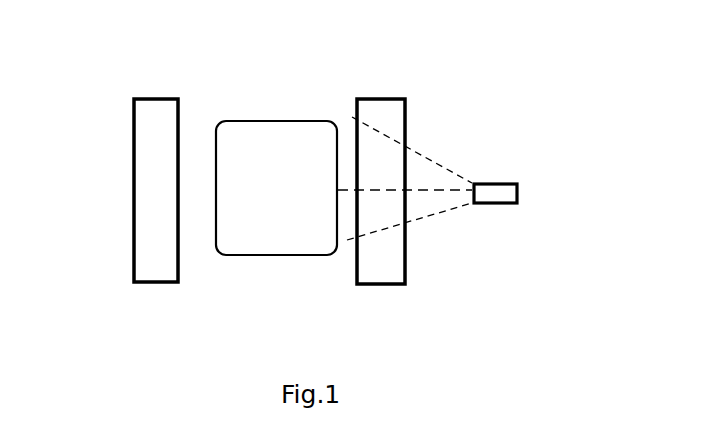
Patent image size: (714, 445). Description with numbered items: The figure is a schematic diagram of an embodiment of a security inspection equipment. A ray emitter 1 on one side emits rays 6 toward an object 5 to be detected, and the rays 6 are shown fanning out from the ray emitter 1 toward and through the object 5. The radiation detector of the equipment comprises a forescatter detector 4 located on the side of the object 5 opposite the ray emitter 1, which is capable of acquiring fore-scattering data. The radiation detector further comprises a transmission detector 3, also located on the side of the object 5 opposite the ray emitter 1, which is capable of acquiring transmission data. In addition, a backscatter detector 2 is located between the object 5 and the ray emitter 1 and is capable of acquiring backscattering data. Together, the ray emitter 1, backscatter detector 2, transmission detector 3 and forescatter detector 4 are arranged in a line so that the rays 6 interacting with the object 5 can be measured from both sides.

The ray emitter 1 is at (505, 183).
The backscatter detector 2 is at (377, 108).
The transmission detector 3 is at (150, 132).
The forescatter detector 4 is at (147, 204).
The object to be detected 5 is at (258, 168).
The rays 6 is at (422, 153).